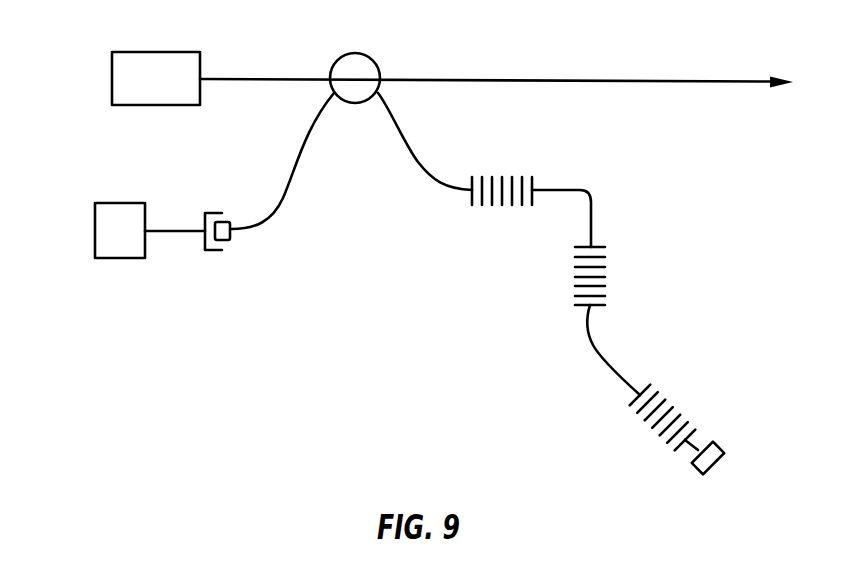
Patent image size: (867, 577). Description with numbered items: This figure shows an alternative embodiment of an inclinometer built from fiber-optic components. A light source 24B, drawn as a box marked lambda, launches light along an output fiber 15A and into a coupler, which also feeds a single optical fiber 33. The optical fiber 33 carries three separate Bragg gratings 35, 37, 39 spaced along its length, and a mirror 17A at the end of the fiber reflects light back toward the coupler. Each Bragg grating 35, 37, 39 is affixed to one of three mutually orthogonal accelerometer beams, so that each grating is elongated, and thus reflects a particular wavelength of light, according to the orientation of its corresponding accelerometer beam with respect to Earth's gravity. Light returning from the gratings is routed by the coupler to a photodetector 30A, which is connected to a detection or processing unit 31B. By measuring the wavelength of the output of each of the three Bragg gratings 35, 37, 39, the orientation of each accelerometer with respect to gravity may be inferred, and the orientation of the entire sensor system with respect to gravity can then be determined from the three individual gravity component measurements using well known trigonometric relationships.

The light source 24B is at (130, 52).
The optical fiber output 15A is at (560, 80).
The detector/processing unit 31B is at (120, 203).
The photodetector 30A is at (222, 213).
The optical fiber 33 is at (417, 162).
The Bragg grating 35 is at (507, 178).
The Bragg grating 37 is at (602, 277).
The Bragg grating 39 is at (672, 402).
The mirror 17A is at (714, 468).